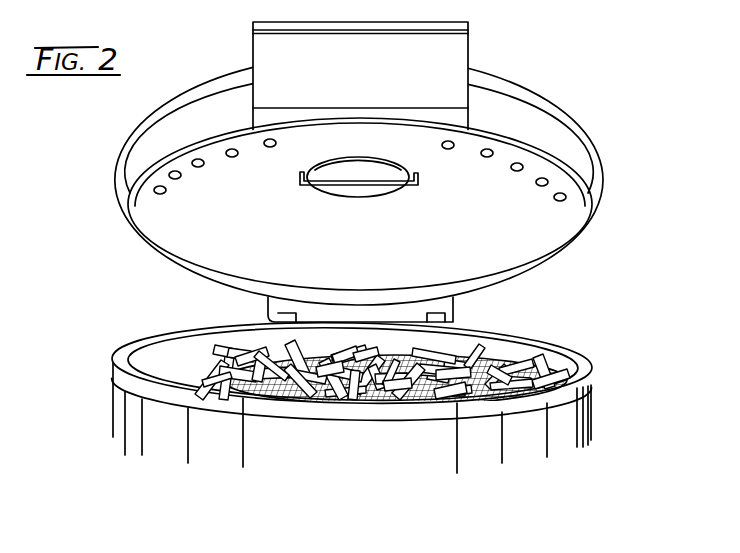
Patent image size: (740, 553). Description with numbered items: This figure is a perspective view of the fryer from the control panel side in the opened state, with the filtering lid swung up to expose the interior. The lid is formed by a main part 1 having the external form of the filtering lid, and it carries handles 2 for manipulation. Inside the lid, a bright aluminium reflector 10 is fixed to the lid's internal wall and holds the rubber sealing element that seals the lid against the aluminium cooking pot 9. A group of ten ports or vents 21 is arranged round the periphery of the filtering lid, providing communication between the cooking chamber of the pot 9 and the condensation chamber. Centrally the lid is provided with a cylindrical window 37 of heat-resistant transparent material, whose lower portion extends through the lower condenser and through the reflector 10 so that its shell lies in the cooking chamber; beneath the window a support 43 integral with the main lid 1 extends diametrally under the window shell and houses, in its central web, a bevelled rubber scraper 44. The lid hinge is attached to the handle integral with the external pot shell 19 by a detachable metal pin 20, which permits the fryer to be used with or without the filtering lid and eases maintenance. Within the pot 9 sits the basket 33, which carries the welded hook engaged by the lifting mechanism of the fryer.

The main part of the filtering lid 1 is at (563, 140).
The handles 2 is at (449, 47).
The cooking pot 9 is at (550, 367).
The reflector 10 is at (272, 234).
The external pot shell 19 is at (577, 417).
The detachable metal pin 20 is at (458, 316).
The ports or vents 21 is at (200, 166).
The basket 33 is at (250, 362).
The window 37 is at (343, 170).
The support 43 is at (376, 205).
The bevelled scraper 44 is at (385, 186).